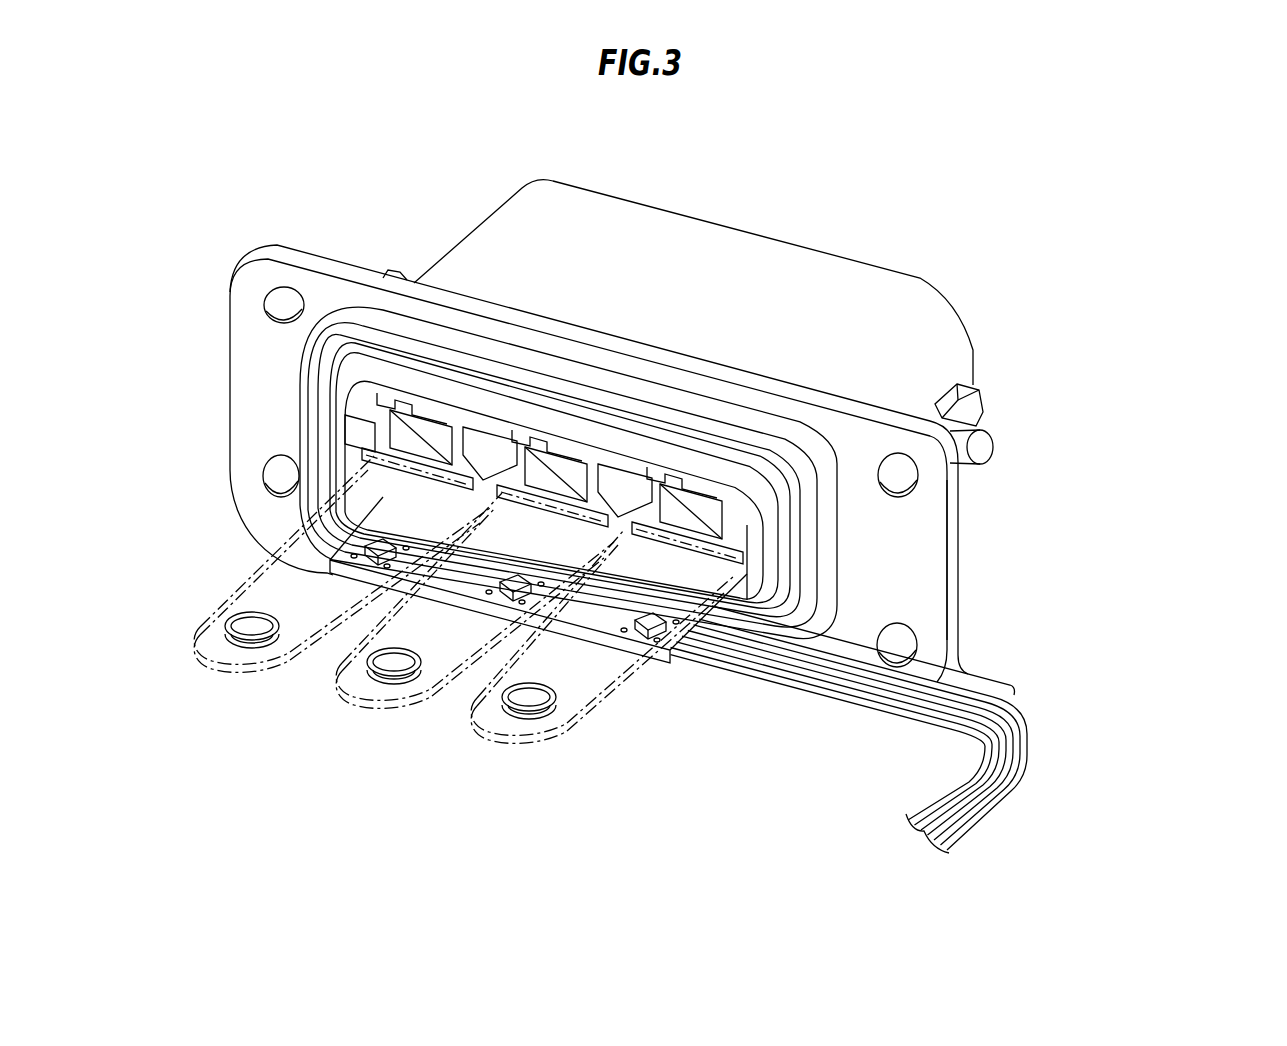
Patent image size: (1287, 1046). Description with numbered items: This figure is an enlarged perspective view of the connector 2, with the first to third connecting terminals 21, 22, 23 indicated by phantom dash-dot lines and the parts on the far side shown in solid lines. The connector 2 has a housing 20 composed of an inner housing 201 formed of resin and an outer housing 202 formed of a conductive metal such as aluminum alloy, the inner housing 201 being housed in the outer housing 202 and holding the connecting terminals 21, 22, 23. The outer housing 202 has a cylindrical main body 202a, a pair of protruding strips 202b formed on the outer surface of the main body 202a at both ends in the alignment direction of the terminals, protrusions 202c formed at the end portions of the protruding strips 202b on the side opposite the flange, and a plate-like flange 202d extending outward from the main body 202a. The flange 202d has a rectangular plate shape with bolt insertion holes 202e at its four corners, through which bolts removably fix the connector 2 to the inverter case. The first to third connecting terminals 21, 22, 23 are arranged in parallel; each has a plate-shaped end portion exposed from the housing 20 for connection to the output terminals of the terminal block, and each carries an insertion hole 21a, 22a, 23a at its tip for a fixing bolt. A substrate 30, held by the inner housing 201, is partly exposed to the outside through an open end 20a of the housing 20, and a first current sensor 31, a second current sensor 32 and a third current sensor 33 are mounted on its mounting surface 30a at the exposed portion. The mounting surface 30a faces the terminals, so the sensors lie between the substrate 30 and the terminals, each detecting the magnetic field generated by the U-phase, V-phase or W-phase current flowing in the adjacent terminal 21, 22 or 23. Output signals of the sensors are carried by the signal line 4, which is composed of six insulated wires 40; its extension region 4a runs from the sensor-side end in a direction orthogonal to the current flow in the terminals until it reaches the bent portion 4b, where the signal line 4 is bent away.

The connector 2 is at (960, 182).
The housing 20 is at (306, 168).
The inner housing 201 is at (410, 447).
The outer housing 202 is at (460, 239).
The main body 202a is at (768, 261).
The protruding strips 202b is at (974, 413).
The protrusions 202c is at (991, 450).
The flange 202d is at (960, 557).
The bolt insertion holes 202e is at (258, 462).
The open end 20a is at (313, 493).
The first connecting terminal 21 is at (209, 653).
The insertion hole 21a is at (254, 632).
The second connecting terminal 22 is at (350, 690).
The insertion hole 22a is at (396, 668).
The third connecting terminal 23 is at (484, 728).
The insertion hole 23a is at (531, 703).
The substrate 30 is at (667, 660).
The mounting surface 30a is at (571, 587).
The first current sensor 31 is at (377, 565).
The second current sensor 32 is at (523, 597).
The third current sensor 33 is at (650, 643).
The signal line 4 is at (1074, 673).
The extension region 4a is at (827, 636).
The bent portion 4b is at (1031, 722).
The insulated wires 40 is at (923, 704).